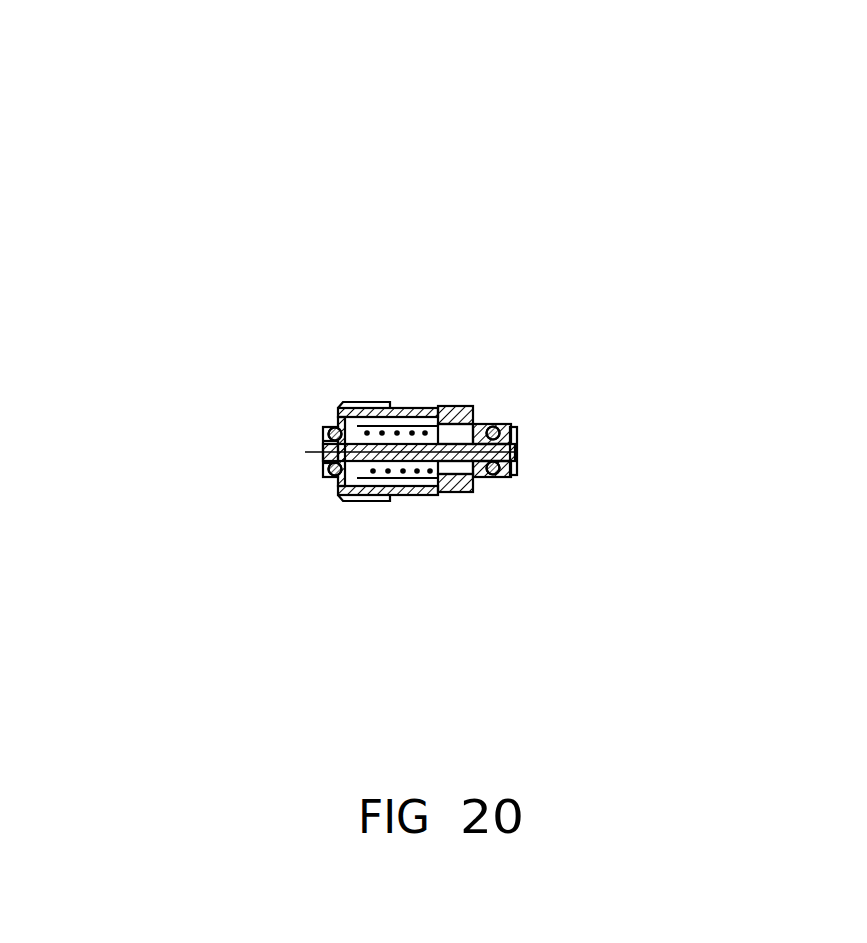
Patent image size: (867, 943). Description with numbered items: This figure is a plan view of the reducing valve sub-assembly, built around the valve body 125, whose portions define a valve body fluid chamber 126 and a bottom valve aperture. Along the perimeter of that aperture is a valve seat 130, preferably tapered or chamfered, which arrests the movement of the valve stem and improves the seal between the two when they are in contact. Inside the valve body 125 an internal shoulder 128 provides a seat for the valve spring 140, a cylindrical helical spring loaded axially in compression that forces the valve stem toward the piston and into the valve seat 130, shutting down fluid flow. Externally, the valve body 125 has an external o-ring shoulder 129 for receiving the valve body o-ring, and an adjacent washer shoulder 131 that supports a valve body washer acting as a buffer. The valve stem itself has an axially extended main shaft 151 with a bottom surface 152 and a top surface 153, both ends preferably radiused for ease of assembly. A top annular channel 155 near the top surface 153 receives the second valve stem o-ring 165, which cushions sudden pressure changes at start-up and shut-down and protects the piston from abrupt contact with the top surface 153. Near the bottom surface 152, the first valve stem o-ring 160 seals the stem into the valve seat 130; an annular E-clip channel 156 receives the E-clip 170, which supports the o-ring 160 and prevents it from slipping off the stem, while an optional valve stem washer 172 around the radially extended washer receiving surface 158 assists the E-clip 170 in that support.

The valve body 125 is at (363, 350).
The valve body fluid chamber 126 is at (363, 477).
The internal shoulder 128 is at (485, 430).
The external o-ring shoulder 129 is at (455, 430).
The washer shoulder 131 is at (473, 430).
The valve seat 130 is at (488, 473).
The valve spring 140 is at (402, 472).
The main shaft 151 is at (395, 470).
The bottom surface 152 is at (516, 450).
The top surface 153 is at (325, 452).
The top annular channel 155 is at (332, 474).
The annular E-clip channel 156 is at (510, 463).
The washer receiving surface 158 is at (510, 426).
The first valve stem o-ring 160 is at (496, 474).
The second valve stem o-ring 165 is at (333, 429).
The E-clip 170 is at (503, 469).
The valve stem washer 172 is at (499, 472).